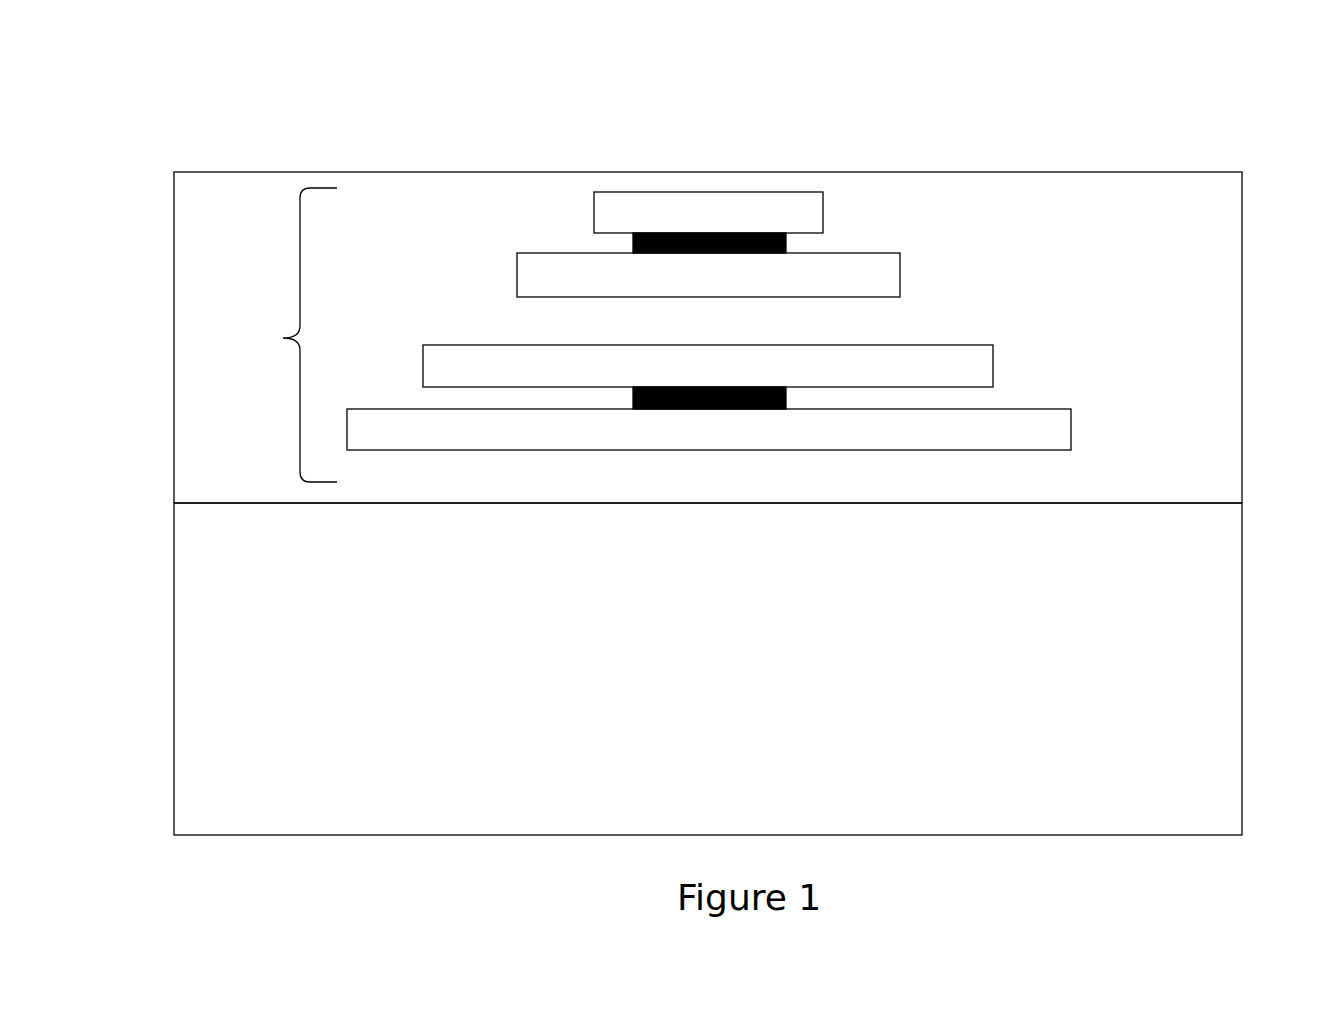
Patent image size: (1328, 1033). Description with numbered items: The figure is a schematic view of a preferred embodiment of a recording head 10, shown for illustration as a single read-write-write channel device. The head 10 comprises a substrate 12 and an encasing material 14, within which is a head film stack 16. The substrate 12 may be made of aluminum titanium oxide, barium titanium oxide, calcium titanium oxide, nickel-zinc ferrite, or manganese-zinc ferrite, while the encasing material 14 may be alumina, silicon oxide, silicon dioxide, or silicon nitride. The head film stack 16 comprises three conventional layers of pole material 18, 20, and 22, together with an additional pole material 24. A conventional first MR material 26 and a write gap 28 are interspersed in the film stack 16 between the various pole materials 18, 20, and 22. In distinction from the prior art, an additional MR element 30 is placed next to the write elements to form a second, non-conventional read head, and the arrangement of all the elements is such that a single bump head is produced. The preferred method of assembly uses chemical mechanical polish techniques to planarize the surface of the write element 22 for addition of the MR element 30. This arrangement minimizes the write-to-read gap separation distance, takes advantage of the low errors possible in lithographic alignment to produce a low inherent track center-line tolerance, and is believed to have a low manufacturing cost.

The head 10 is at (1172, 123).
The substrate 12 is at (1242, 698).
The encasing material 14 is at (1206, 172).
The head film stack 16 is at (291, 335).
The pole material 18 is at (986, 428).
The pole material 20 is at (936, 365).
The pole material 22 is at (848, 273).
The additional pole material 24 is at (803, 212).
The first MR material 26 is at (786, 398).
The write gap 28 is at (877, 314).
The MR element 30 is at (786, 241).